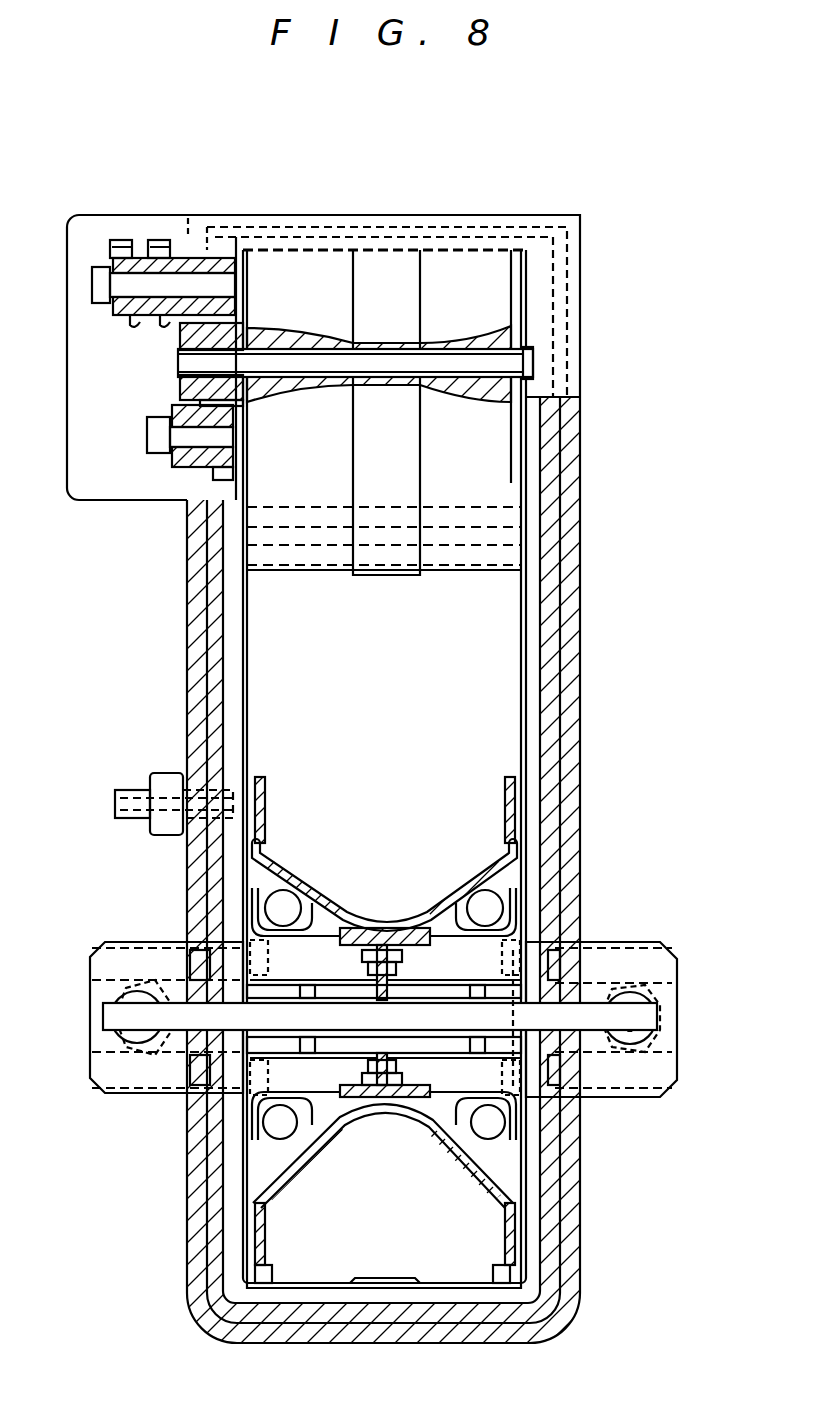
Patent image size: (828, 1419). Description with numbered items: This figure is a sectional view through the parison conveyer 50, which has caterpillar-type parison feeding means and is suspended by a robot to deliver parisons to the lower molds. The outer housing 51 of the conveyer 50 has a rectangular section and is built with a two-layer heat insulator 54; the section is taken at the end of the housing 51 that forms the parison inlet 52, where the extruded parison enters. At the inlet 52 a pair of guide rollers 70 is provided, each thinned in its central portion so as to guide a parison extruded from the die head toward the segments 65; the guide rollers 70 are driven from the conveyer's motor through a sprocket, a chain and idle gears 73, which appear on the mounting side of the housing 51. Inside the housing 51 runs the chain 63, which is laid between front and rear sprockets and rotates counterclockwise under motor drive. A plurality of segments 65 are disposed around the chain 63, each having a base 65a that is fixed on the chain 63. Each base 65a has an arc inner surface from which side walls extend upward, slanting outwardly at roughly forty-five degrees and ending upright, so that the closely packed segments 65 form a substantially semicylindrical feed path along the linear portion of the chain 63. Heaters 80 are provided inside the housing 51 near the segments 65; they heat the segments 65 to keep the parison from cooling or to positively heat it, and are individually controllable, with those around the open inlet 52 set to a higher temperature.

The conveyer 50 is at (678, 263).
The housing 51 is at (580, 635).
The parison inlet 52 is at (303, 270).
The two-layer heat insulator 54 is at (197, 1158).
The chain 63 is at (410, 980).
The segments 65 is at (287, 853).
The base 65a is at (368, 933).
The guide rollers 70 is at (458, 333).
The idle gears 73 is at (190, 243).
The heaters 80 is at (293, 897).